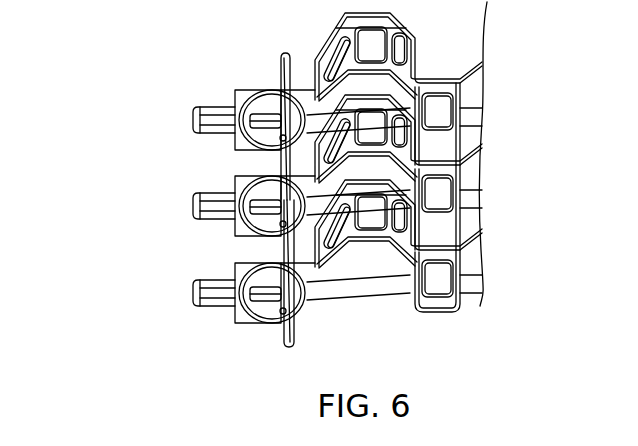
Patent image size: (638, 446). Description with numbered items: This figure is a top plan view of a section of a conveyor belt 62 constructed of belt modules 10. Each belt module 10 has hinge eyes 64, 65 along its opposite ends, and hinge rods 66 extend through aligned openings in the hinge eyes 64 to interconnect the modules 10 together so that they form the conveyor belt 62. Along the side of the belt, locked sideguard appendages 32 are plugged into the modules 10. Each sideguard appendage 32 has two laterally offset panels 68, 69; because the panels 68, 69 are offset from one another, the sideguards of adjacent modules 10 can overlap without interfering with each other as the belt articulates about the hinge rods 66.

The module 10 is at (468, 243).
The locked sideguard appendage 32 is at (244, 322).
The conveyor belt 62 is at (104, 140).
The hinge eye 64 is at (393, 20).
The hinge eye 65 is at (448, 303).
The hinge rod 66 is at (468, 118).
The panel 68 is at (297, 341).
The panel 69 is at (282, 70).